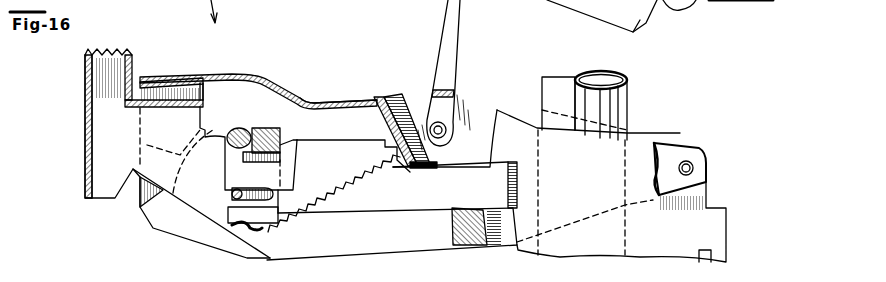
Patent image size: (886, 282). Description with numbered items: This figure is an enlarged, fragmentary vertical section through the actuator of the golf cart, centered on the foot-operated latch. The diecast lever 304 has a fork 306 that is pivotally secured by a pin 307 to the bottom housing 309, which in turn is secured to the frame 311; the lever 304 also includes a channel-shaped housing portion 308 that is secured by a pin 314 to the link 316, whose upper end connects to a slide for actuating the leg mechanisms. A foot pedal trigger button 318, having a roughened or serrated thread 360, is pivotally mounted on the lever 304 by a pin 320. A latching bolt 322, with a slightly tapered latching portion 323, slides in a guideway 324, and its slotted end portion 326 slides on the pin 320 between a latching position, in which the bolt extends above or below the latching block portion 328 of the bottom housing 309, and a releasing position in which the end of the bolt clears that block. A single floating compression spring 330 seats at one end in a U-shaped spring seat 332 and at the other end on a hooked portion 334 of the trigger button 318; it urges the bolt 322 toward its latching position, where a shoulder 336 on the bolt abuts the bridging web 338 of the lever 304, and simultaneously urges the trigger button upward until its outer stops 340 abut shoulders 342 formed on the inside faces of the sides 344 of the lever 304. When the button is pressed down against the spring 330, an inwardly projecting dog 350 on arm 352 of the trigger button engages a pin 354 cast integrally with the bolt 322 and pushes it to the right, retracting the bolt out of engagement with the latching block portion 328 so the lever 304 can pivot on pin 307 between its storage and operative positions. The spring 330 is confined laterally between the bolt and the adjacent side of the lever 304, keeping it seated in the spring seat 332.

The diecast lever 304 is at (297, 90).
The fork 306 is at (668, 155).
The pin 307 is at (696, 162).
The housing portion 308 is at (245, 78).
The bottom housing 309 is at (636, 133).
The frame 311 is at (562, 88).
The pin 314 is at (447, 125).
The link 316 is at (448, 16).
The foot pedal trigger button 318 is at (86, 95).
The pin 320 is at (230, 196).
The latching bolt 322 is at (362, 210).
The latching portion 323 is at (497, 200).
The guideway 324 is at (452, 240).
The slotted end portion 326 is at (232, 212).
The latching block portion 328 is at (513, 120).
The compression spring 330 is at (340, 205).
The U-shaped spring seat 332 is at (387, 140).
The hooked portion 334 is at (262, 232).
The shoulder 336 is at (417, 118).
The bridging web 338 is at (387, 113).
The outer stops 340 is at (202, 130).
The shoulders 342 is at (193, 80).
The sides 344 is at (225, 95).
The dog 350 is at (253, 128).
The arm 352 is at (205, 150).
The pin 354 is at (233, 137).
The serrated thread 360 is at (117, 50).